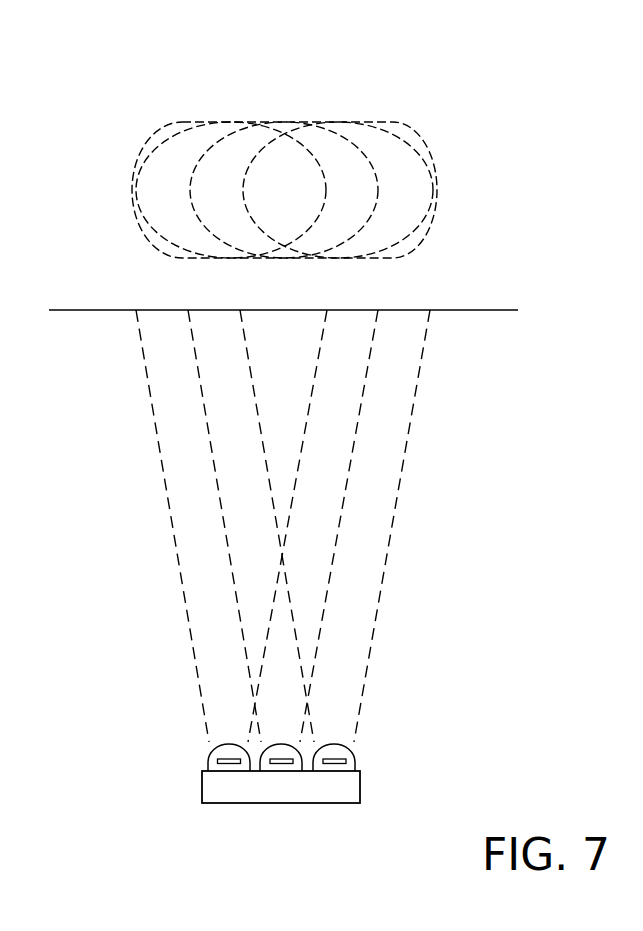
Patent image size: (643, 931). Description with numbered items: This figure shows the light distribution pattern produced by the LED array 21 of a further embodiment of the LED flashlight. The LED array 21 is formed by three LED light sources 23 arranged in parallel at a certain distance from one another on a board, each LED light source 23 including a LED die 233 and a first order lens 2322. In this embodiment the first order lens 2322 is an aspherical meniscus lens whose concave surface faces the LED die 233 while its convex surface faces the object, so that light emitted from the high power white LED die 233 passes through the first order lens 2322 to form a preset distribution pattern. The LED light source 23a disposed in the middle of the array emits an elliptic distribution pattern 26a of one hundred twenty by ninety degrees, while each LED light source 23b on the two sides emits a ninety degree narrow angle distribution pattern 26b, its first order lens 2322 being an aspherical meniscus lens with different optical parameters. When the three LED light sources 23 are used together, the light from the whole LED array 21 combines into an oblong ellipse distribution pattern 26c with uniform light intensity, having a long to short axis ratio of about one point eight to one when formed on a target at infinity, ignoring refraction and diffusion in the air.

The LED array 21 is at (323, 795).
The LED light source 23 is at (275, 763).
The middle LED light source 23a is at (217, 859).
The side LED light source 23b is at (269, 845).
The LED die 233 is at (218, 766).
The first order lens 2322 is at (210, 748).
The elliptic distribution pattern 26a is at (213, 137).
The narrow angle distribution pattern 26b is at (163, 135).
The oblong ellipse distribution pattern 26c is at (432, 57).